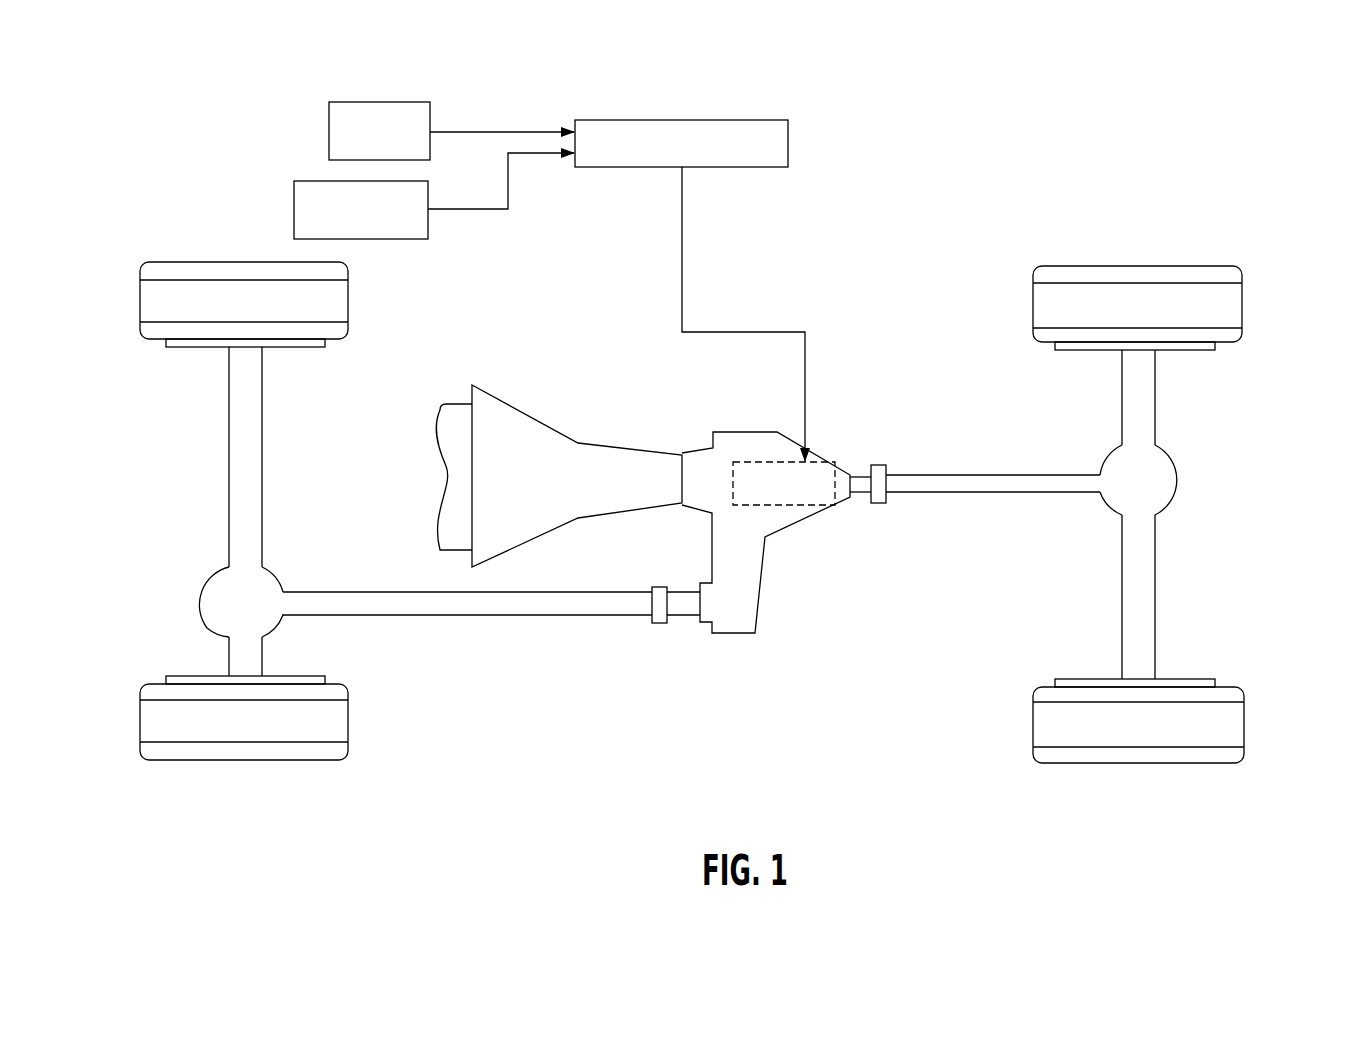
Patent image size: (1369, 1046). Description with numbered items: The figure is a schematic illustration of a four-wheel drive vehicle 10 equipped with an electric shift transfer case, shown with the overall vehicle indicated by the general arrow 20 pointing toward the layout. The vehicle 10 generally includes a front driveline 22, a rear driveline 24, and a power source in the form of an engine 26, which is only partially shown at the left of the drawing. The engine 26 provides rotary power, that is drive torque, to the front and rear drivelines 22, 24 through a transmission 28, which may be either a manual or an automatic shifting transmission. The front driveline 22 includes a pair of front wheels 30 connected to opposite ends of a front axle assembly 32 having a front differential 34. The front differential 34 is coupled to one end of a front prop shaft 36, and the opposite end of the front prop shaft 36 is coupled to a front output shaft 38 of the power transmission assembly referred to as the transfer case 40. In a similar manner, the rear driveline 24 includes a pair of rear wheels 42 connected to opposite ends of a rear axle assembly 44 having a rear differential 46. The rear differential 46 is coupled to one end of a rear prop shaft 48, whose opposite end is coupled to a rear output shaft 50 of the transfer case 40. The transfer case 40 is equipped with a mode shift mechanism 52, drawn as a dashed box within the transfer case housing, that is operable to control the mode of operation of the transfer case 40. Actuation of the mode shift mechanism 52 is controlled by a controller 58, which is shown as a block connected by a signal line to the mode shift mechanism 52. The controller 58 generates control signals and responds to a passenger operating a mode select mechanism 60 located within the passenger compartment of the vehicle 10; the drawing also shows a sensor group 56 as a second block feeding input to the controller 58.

The four-wheel drive vehicle 10 is at (1060, 135).
The rear axle assembly 20 is at (1300, 432).
The front driveline 22 is at (310, 478).
The rear driveline 24 is at (1016, 438).
The engine 26 is at (438, 468).
The transmission 28 is at (600, 500).
The front wheels 30 is at (172, 292).
The front axle assembly 32 is at (240, 403).
The front differential 34 is at (222, 598).
The front prop shaft 36 is at (582, 600).
The front output shaft 38 is at (684, 605).
The transfer case 40 is at (800, 530).
The rear wheels 42 is at (1141, 297).
The rear axle assembly 44 is at (1142, 391).
The rear differential 46 is at (1163, 483).
The rear prop shaft 48 is at (1028, 488).
The rear output shaft 50 is at (856, 476).
The mode shift mechanism 52 is at (743, 470).
The sensor group 56 is at (329, 130).
The controller 58 is at (622, 120).
The mode select mechanism 60 is at (392, 240).